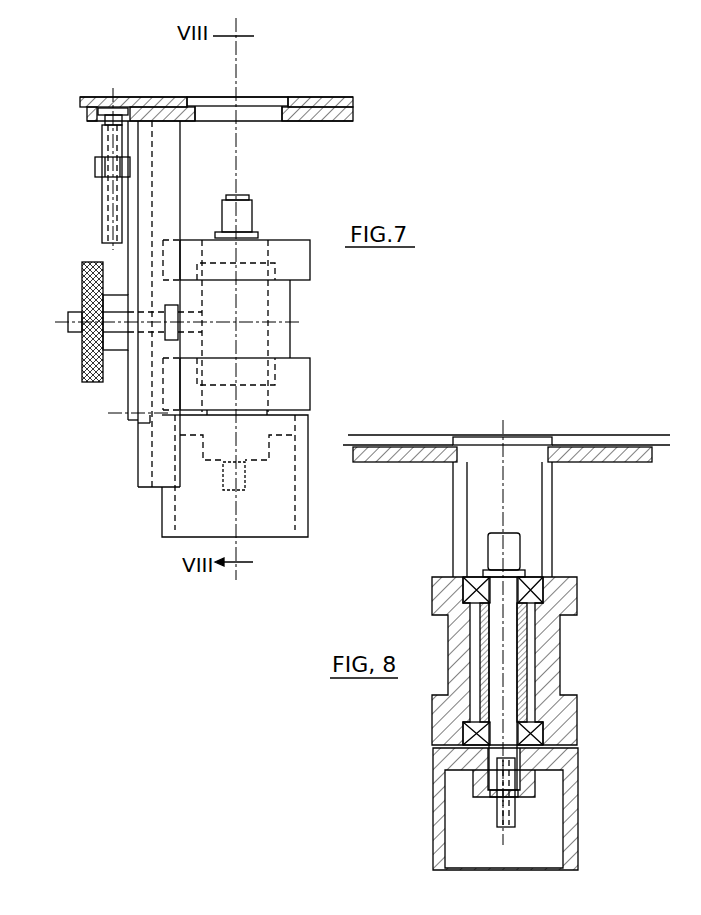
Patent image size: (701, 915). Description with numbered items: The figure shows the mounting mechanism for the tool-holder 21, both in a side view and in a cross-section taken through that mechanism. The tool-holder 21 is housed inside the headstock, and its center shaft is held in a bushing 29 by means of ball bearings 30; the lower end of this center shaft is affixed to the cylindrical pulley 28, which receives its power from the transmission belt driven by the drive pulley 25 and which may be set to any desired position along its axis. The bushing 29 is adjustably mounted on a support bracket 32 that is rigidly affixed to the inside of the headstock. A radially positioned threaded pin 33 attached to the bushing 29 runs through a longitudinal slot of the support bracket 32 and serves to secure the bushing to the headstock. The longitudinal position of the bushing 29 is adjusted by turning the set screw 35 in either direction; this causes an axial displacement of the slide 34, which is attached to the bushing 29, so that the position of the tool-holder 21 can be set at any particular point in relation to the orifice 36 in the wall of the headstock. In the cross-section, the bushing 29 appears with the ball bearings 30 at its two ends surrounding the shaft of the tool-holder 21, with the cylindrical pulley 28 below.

In FIG. 7, the tool-holder 21 is at (243, 207).
In FIG. 8, the drive pulley 25 is at (543, 648).
In FIG. 7, the cylindrical pulley 28 is at (303, 490).
In FIG. 8, the cylindrical pulley 28 is at (570, 820).
In FIG. 7, the bushing 29 is at (280, 320).
In FIG. 8, the ball bearings 30 is at (537, 590).
In FIG. 7, the support bracket 32 is at (162, 158).
In FIG. 7, the threaded pin 33 is at (70, 332).
In FIG. 7, the slide 34 is at (130, 260).
In FIG. 7, the set screw 35 is at (113, 202).
In FIG. 7, the orifice 36 is at (253, 97).